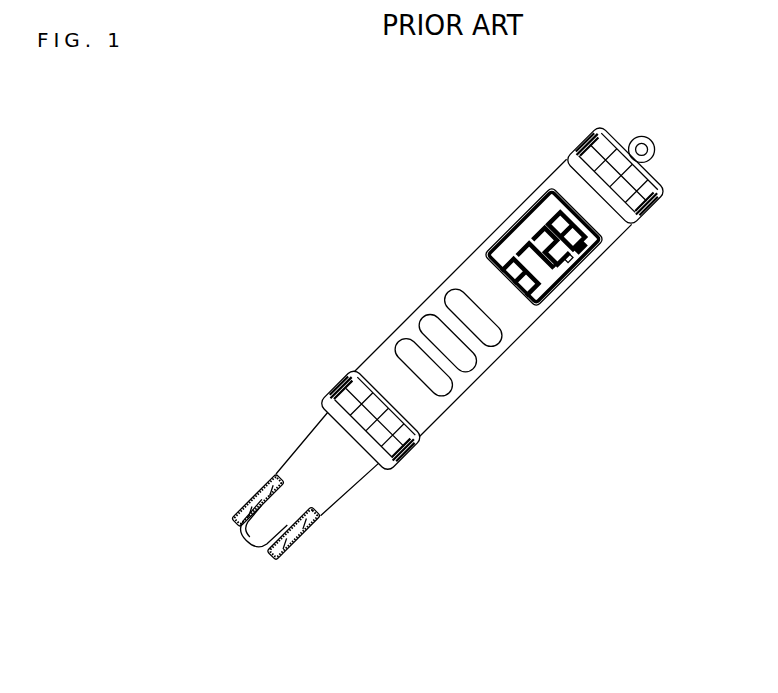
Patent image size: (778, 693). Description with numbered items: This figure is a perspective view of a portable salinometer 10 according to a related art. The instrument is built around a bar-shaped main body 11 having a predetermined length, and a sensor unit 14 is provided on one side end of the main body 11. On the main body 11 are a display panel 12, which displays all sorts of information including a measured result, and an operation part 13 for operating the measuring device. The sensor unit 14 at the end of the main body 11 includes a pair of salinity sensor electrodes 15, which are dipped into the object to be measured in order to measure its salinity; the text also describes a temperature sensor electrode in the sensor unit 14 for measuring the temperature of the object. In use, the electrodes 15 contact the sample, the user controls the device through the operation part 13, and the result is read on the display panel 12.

The pen-type meter (prior art) 10 is at (399, 100).
The main body 11 is at (432, 283).
The display panel 12 is at (550, 281).
The operation part 13 is at (475, 383).
The sensor unit 14 is at (273, 461).
The salinity sensor electrodes 15 is at (291, 539).